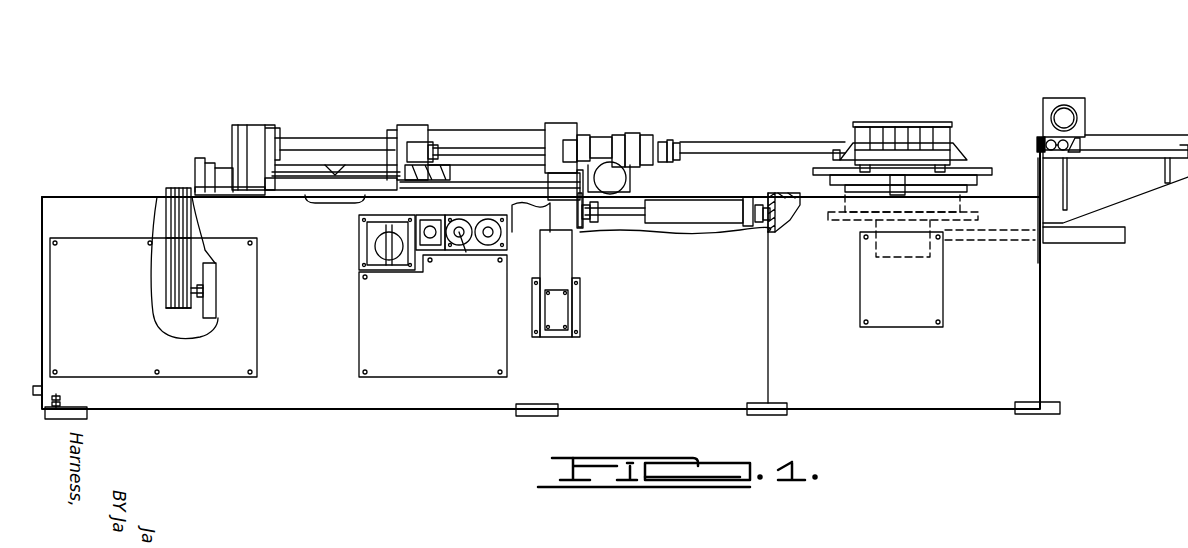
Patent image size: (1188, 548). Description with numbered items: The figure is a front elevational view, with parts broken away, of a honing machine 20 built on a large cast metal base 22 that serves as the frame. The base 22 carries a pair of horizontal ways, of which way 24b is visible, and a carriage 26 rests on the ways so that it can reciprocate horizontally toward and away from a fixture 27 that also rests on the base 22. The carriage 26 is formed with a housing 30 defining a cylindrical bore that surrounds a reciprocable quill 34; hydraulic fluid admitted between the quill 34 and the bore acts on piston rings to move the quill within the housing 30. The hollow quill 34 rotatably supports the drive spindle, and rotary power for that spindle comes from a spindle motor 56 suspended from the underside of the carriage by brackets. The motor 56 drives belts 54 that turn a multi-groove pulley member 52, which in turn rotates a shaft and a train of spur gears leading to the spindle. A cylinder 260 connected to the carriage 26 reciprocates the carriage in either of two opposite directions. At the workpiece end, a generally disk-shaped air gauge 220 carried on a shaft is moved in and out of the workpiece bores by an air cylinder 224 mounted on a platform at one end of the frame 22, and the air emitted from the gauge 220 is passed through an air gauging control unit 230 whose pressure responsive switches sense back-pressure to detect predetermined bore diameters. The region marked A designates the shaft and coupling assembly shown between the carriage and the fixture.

The honing machine 20 is at (317, 133).
The base 22 is at (690, 318).
The horizontal way 24b is at (458, 187).
The carriage 26 is at (512, 167).
The fixture 27 is at (917, 118).
The housing 30 is at (462, 133).
The quill 34 is at (350, 140).
The multi-groove pulley member 52 is at (163, 188).
The belts 54 is at (173, 258).
The spindle motor 56 is at (210, 317).
The air gauge 220 is at (1040, 138).
The air cylinder 224 is at (1120, 138).
The air gauging control unit 230 is at (1070, 102).
The cylinder 260 is at (693, 205).
The shaft assembly A is at (607, 115).